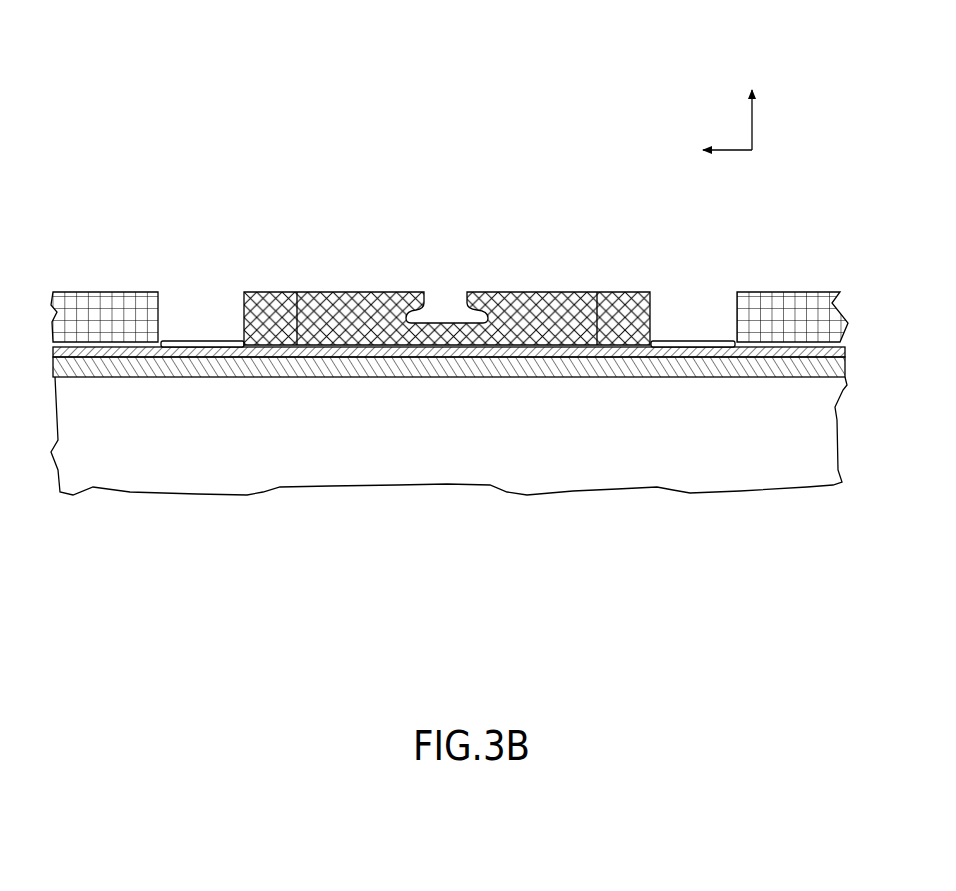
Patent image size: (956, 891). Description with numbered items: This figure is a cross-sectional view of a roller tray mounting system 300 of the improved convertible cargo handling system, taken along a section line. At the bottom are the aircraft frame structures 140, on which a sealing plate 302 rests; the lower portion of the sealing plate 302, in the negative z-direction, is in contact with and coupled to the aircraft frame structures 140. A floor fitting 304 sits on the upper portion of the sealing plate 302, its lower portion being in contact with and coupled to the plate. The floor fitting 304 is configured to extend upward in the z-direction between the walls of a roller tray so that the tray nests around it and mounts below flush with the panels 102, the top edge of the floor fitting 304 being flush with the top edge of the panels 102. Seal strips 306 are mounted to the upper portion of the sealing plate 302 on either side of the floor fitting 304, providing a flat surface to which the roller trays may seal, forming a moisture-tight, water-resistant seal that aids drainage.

The roller tray mounting system 300 is at (499, 134).
The panels 102 is at (122, 312).
The aircraft frame structures 140 is at (508, 370).
The sealing plate 302 is at (552, 350).
The floor fitting 304 is at (364, 319).
The seal strips 306 is at (690, 340).